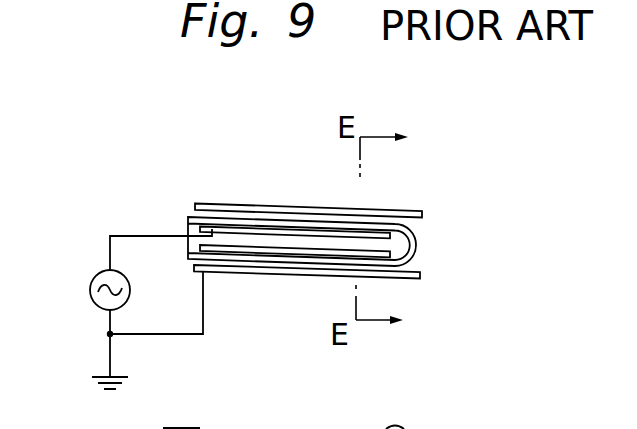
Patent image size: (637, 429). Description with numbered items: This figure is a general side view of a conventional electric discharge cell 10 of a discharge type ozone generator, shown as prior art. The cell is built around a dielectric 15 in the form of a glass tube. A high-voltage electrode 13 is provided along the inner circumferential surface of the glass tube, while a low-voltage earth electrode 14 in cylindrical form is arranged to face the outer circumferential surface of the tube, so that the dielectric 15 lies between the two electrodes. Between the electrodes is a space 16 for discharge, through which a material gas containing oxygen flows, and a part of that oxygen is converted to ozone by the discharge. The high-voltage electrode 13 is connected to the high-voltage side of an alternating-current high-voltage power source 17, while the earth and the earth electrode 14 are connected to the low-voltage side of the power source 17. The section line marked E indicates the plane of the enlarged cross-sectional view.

The prior art electrode assembly 10 is at (199, 186).
The high-voltage electrode 13 is at (406, 279).
The low-voltage earth electrode 14 is at (390, 211).
The dielectric 15 is at (255, 217).
The space for discharge 16 is at (277, 272).
The alternating-current high-voltage power source 17 is at (90, 290).